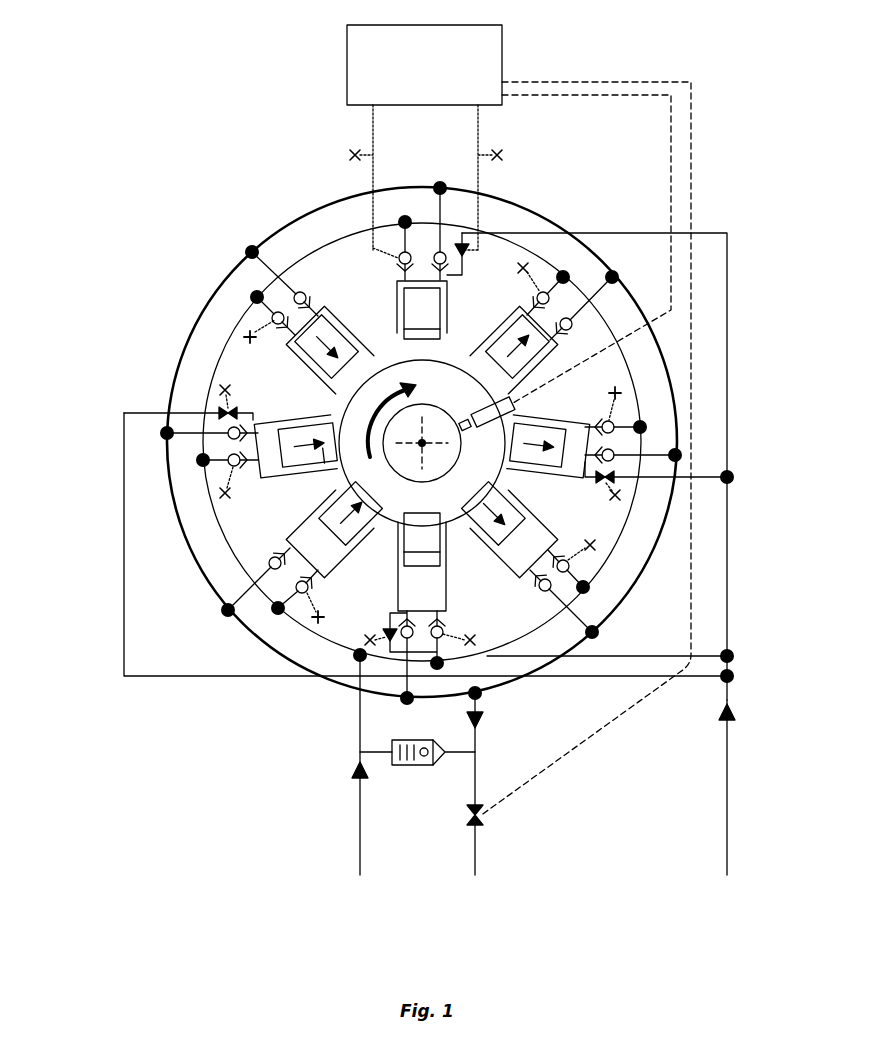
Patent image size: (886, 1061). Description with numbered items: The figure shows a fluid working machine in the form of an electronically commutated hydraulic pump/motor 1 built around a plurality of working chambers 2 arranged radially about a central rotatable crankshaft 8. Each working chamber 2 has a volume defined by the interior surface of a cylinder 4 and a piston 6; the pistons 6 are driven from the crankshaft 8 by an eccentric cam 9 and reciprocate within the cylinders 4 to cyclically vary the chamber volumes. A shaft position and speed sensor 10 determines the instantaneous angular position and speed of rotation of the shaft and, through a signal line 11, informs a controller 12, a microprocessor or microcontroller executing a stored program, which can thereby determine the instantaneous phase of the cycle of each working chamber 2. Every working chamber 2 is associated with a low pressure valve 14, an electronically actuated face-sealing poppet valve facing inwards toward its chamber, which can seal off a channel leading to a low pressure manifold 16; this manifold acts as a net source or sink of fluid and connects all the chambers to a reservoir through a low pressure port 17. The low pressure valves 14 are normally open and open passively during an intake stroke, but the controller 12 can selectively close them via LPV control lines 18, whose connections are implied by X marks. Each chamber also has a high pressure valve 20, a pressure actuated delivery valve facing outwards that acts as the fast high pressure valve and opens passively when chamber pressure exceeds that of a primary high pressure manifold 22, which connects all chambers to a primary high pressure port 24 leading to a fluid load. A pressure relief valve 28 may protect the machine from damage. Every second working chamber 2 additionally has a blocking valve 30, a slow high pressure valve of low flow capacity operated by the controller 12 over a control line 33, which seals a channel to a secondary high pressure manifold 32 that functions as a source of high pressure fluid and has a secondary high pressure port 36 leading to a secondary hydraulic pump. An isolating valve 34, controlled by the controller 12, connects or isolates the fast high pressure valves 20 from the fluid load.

The electronically commutated hydraulic pump/motor 1 is at (146, 55).
The working chamber 2 is at (270, 417).
The cylinder 4 is at (313, 462).
The piston 6 is at (350, 500).
The rotatable crankshaft 8 is at (422, 443).
The eccentric cam 9 is at (298, 290).
The shaft position and speed sensor 10 is at (590, 402).
The signal line 11 is at (655, 92).
The controller 12 is at (424, 65).
The low pressure valve 14 is at (388, 372).
The low pressure manifold 16 is at (242, 320).
The low pressure port 17 is at (361, 776).
The LPV control line 18 is at (373, 148).
The high pressure valve 20 is at (318, 308).
The primary high pressure manifold 22 is at (177, 382).
The primary high pressure port 24 is at (476, 795).
The pressure relief valve 28 is at (392, 752).
The blocking valve 30 is at (625, 497).
The secondary high pressure manifold 32 is at (727, 296).
The control line 33 is at (692, 196).
The isolating valve 34 is at (480, 823).
The secondary high pressure port 36 is at (725, 787).